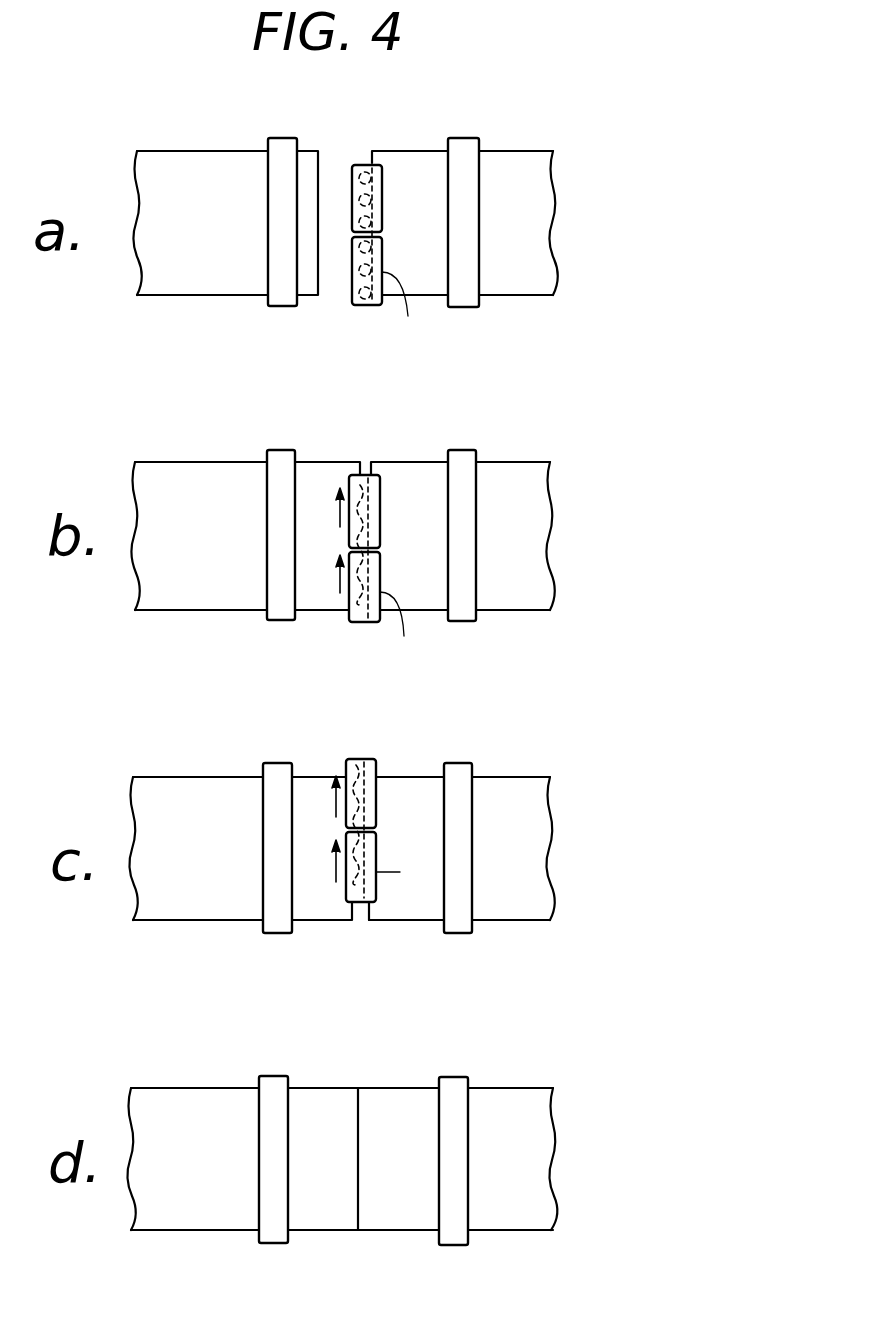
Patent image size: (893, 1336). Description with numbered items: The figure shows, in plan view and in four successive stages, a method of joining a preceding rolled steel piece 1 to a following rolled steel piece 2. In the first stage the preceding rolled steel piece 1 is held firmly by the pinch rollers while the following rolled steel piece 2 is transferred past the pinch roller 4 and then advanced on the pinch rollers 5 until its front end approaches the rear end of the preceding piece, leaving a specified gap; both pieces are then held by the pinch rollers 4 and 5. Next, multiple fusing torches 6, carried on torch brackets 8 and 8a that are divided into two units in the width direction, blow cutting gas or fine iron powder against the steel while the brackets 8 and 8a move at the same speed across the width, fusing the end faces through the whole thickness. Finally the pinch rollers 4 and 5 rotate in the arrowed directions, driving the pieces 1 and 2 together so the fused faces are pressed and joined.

The preceding rolled steel piece 1 is at (543, 161).
The following rolled steel piece 2 is at (162, 166).
The pinch roller 4 is at (280, 150).
The pinch roller 5 is at (468, 150).
The fusing torch 6 is at (380, 192).
The torch bracket 8 is at (362, 165).
The torch bracket 8a is at (412, 582).